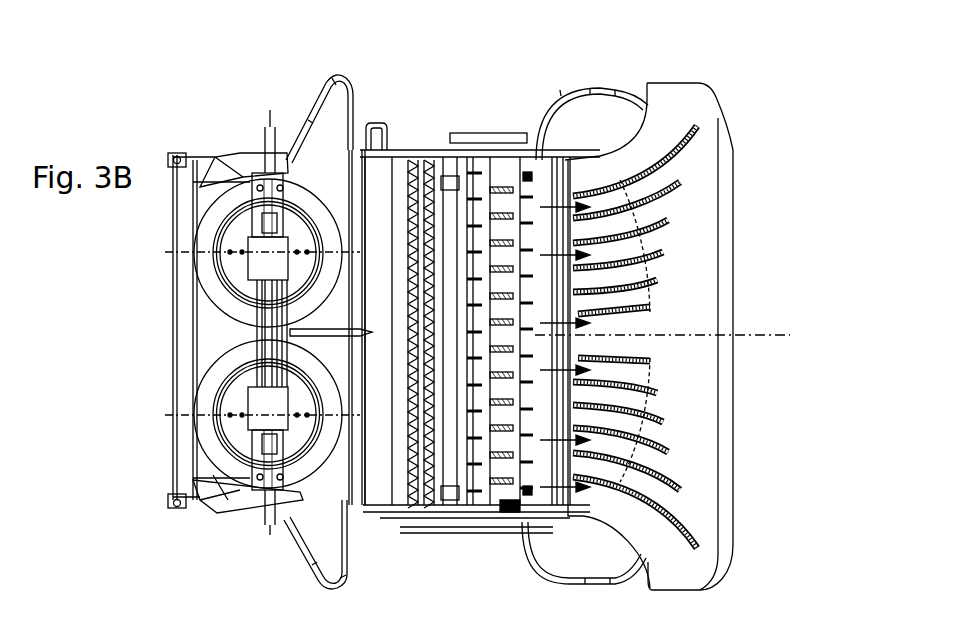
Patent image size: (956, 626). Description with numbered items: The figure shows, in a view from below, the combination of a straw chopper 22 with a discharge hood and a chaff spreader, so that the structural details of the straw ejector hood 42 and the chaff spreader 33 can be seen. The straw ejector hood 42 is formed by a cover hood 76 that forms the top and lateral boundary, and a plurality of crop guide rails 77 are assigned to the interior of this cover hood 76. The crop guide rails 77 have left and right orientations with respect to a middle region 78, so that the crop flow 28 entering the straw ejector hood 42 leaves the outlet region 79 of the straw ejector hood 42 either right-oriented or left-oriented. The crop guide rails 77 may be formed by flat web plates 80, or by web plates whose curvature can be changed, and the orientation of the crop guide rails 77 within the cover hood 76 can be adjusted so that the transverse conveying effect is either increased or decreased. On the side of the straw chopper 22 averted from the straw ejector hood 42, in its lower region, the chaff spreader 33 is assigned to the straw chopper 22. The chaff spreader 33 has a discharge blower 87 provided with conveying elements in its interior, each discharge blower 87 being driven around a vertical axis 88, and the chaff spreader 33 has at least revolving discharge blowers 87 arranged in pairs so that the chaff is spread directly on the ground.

The straw chopper 22 is at (471, 118).
The crop flow 28 is at (546, 118).
The chaff spreader 33 is at (287, 93).
The straw ejector hood 42 is at (659, 64).
The cover hood 76 is at (665, 107).
The crop guide rails 77 is at (650, 307).
The middle region 78 is at (780, 333).
The outlet region 79 is at (766, 291).
The flat web plates 80 is at (697, 548).
The discharge blower 87 is at (242, 193).
The vertical axis 88 is at (266, 248).